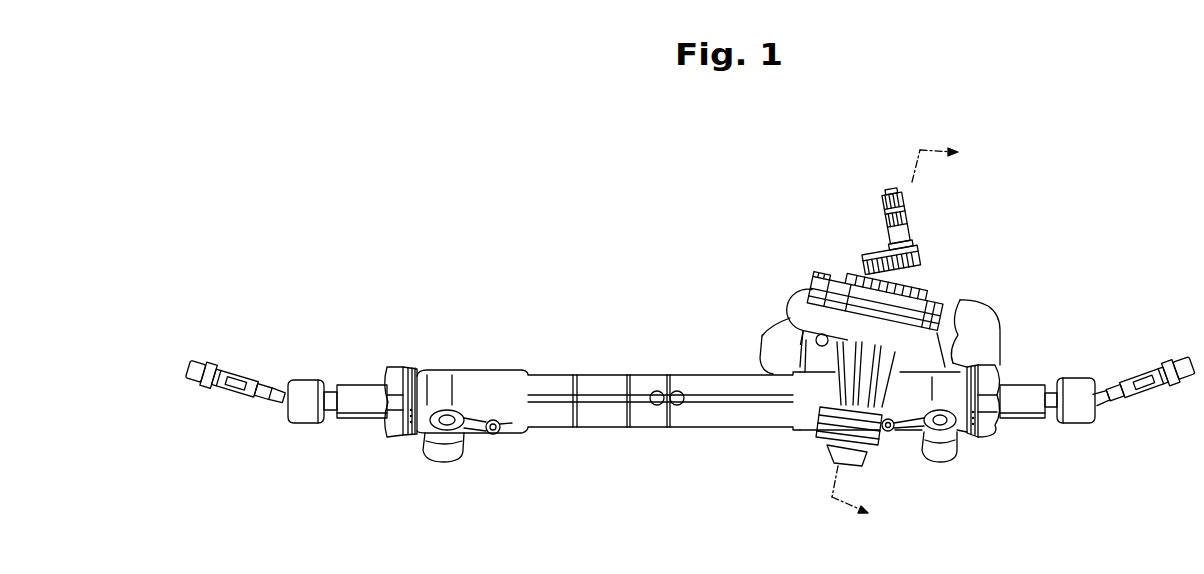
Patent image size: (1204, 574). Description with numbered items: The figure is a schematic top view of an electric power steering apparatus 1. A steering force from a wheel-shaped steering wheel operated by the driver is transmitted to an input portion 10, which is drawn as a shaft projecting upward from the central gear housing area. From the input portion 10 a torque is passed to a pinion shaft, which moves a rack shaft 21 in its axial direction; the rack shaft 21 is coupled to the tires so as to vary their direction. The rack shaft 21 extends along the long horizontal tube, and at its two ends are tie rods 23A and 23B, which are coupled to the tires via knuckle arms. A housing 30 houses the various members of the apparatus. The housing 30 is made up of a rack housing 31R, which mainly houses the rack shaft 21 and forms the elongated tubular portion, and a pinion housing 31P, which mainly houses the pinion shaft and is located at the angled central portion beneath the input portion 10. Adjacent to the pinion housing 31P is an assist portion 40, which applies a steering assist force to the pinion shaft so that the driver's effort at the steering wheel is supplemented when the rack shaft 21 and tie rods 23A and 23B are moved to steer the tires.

The electric power steering apparatus 1 is at (1062, 191).
The input portion 10 is at (918, 210).
The rack shaft 21 is at (357, 382).
The tie rod 23A is at (194, 360).
The tie rod 23B is at (1185, 360).
The housing 30 is at (703, 263).
The pinion housing 31P is at (814, 297).
The rack housing 31R is at (772, 372).
The assist portion 40 is at (985, 308).